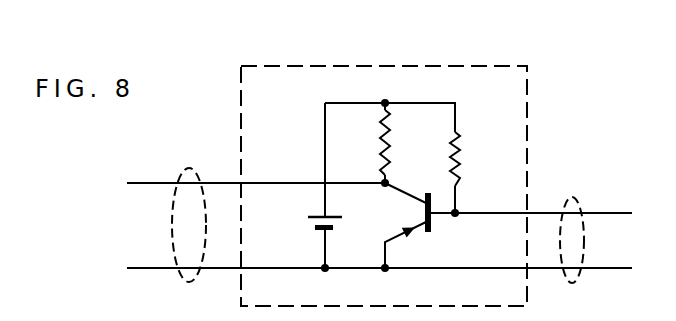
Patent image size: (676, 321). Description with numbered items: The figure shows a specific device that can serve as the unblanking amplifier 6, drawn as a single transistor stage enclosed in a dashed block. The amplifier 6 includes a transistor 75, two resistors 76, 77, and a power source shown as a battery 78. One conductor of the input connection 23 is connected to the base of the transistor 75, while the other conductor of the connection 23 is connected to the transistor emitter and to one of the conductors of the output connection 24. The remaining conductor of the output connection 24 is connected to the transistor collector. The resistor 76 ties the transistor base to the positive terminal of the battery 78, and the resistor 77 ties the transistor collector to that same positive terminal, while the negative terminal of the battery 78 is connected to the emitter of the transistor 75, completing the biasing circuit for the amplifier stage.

The unblanking amplifier 6 is at (392, 66).
The input connection 23 is at (573, 196).
The output connection 24 is at (188, 167).
The transistor 75 is at (420, 231).
The resistor 76 is at (459, 166).
The resistor 77 is at (391, 150).
The battery 78 is at (313, 222).